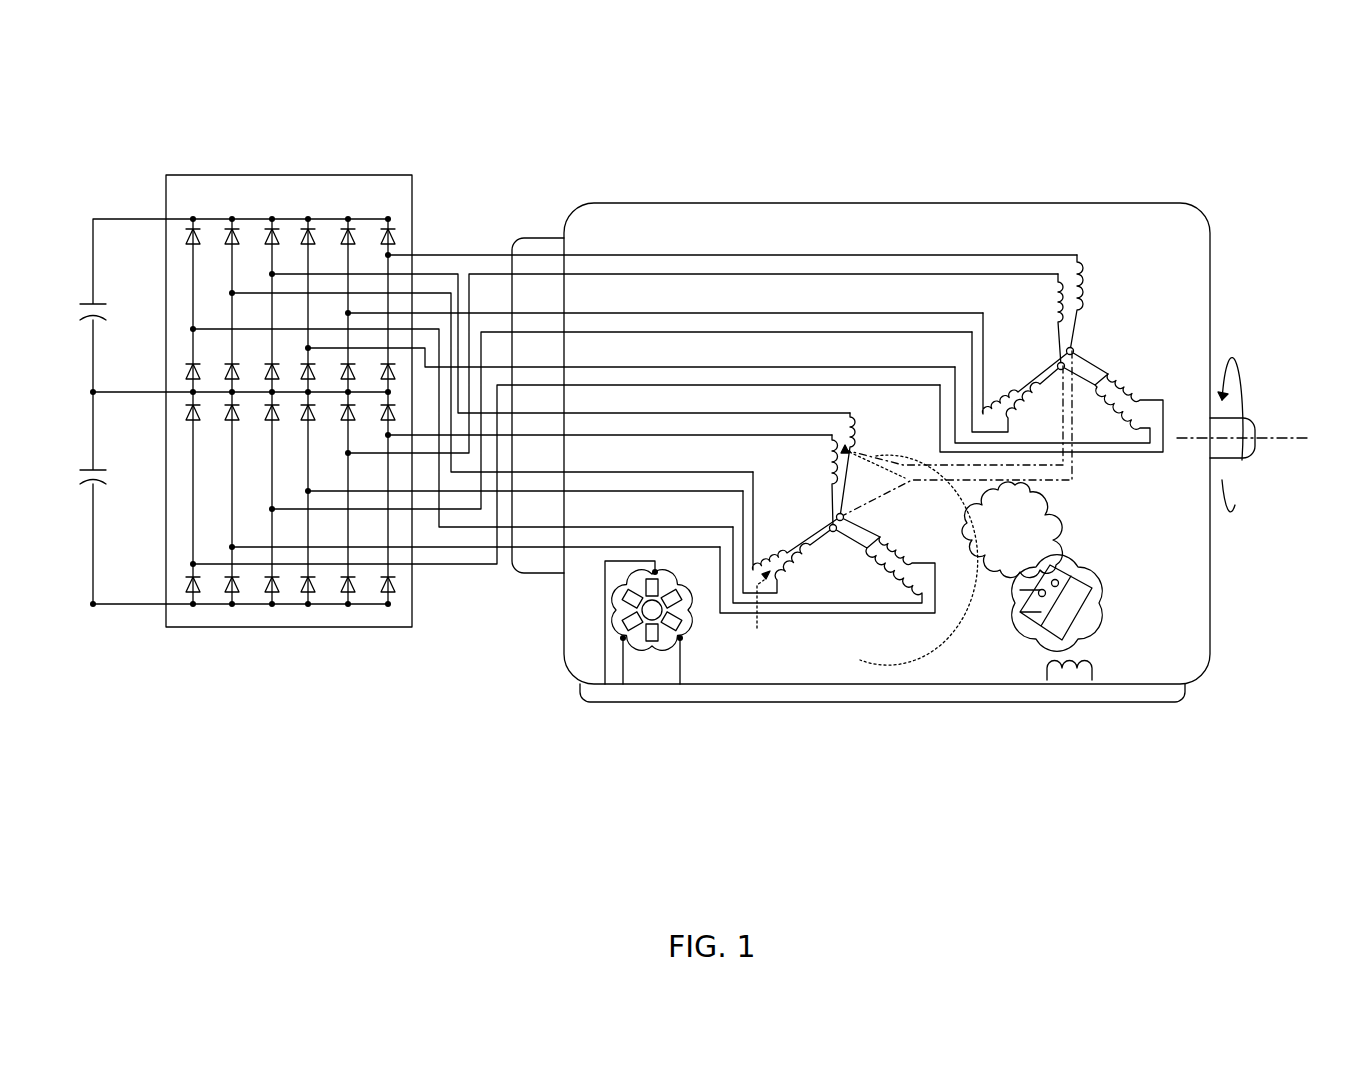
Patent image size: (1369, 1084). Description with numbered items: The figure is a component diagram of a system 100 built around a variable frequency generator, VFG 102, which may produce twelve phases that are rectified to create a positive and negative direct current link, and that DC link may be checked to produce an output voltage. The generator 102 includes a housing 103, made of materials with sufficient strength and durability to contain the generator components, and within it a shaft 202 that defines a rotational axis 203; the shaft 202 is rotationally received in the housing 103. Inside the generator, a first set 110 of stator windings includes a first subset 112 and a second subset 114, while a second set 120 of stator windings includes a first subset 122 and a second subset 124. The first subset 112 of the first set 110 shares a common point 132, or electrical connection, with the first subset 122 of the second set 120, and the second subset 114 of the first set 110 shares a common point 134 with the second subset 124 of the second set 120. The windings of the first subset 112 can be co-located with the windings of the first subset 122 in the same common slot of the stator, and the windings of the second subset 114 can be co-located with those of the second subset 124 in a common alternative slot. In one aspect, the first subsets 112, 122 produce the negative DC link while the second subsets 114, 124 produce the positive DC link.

The system 100 is at (156, 69).
The variable frequency generator 102 is at (1077, 127).
The housing 103 is at (1170, 203).
The first set of stator windings 110 is at (911, 622).
The first subset of the first set of stator windings 112 is at (915, 593).
The second subset of the first set of stator windings 114 is at (915, 555).
The second set of stator windings 120 is at (1128, 475).
The first subset of the second set of stator windings 122 is at (1130, 462).
The second subset of the second set of stator windings 124 is at (1128, 392).
The common point 132 is at (932, 465).
The common point 134 is at (957, 487).
The shaft 202 is at (1222, 400).
The rotational axis 203 is at (1273, 437).